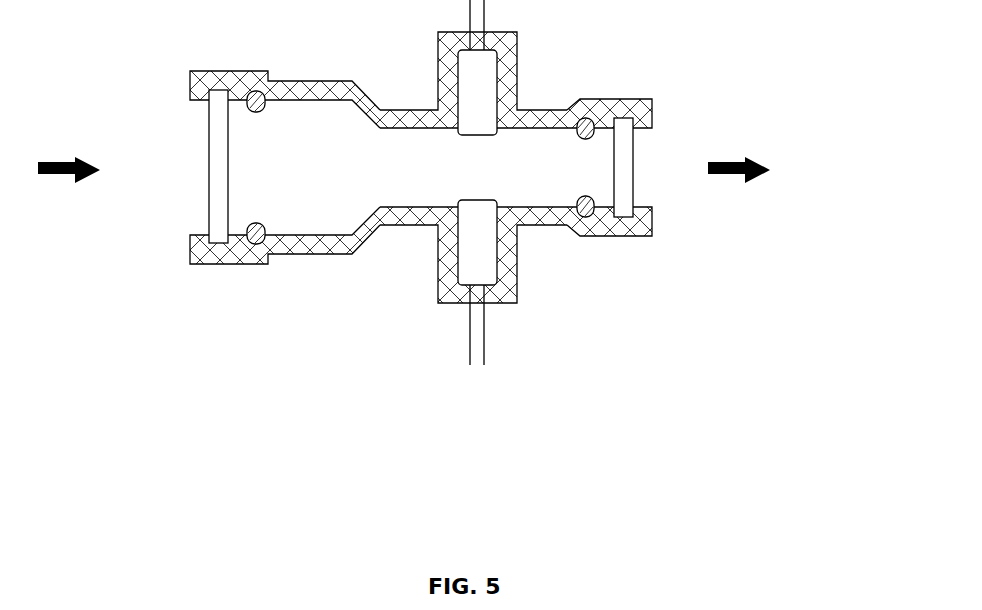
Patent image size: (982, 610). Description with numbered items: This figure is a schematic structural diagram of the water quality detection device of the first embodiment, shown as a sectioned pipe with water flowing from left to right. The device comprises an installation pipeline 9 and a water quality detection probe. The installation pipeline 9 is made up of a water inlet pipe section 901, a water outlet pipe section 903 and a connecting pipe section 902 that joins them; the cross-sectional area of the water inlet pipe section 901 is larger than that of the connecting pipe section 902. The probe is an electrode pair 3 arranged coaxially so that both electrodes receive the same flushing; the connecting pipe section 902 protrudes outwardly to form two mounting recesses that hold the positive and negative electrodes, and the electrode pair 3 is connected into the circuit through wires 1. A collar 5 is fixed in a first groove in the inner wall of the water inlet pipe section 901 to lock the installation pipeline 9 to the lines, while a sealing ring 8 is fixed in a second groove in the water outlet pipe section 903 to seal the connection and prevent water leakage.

The wire 1 is at (511, 253).
The electrode pair 3 is at (483, 258).
The collar 5 is at (253, 297).
The sealing ring 8 is at (674, 315).
The installation pipeline 9 is at (532, 258).
The water inlet pipe section 901 is at (302, 82).
The connecting pipe section 902 is at (536, 110).
The water outlet pipe section 903 is at (620, 112).